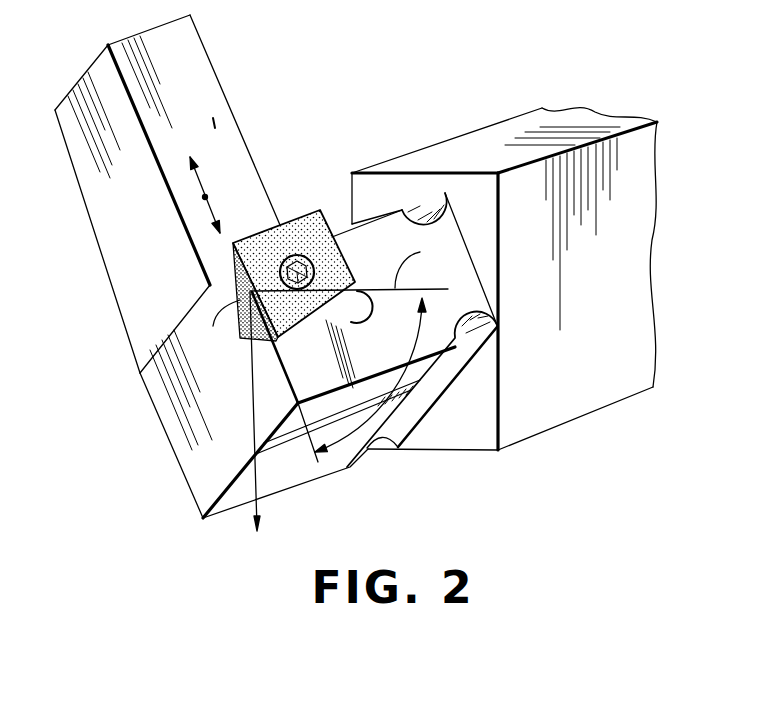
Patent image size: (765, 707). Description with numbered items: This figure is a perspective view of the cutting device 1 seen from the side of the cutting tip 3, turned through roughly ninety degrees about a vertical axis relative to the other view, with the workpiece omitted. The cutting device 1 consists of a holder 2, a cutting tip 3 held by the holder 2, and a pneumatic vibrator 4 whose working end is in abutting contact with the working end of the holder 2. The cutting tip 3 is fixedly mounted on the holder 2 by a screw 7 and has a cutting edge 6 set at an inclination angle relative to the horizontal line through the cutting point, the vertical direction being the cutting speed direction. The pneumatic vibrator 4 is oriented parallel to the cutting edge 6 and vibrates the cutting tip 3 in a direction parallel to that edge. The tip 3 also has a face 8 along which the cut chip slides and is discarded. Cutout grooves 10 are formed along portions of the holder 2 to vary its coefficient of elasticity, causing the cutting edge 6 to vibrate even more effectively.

The cutting device 1 is at (377, 93).
The holder 2 is at (458, 262).
The cutting tip 3 is at (293, 217).
The pneumatic vibrator 4 is at (197, 83).
The cutting edge 6 is at (231, 262).
The screw 7 is at (305, 270).
The face 8 is at (313, 227).
The cutout grooves 10 is at (423, 220).